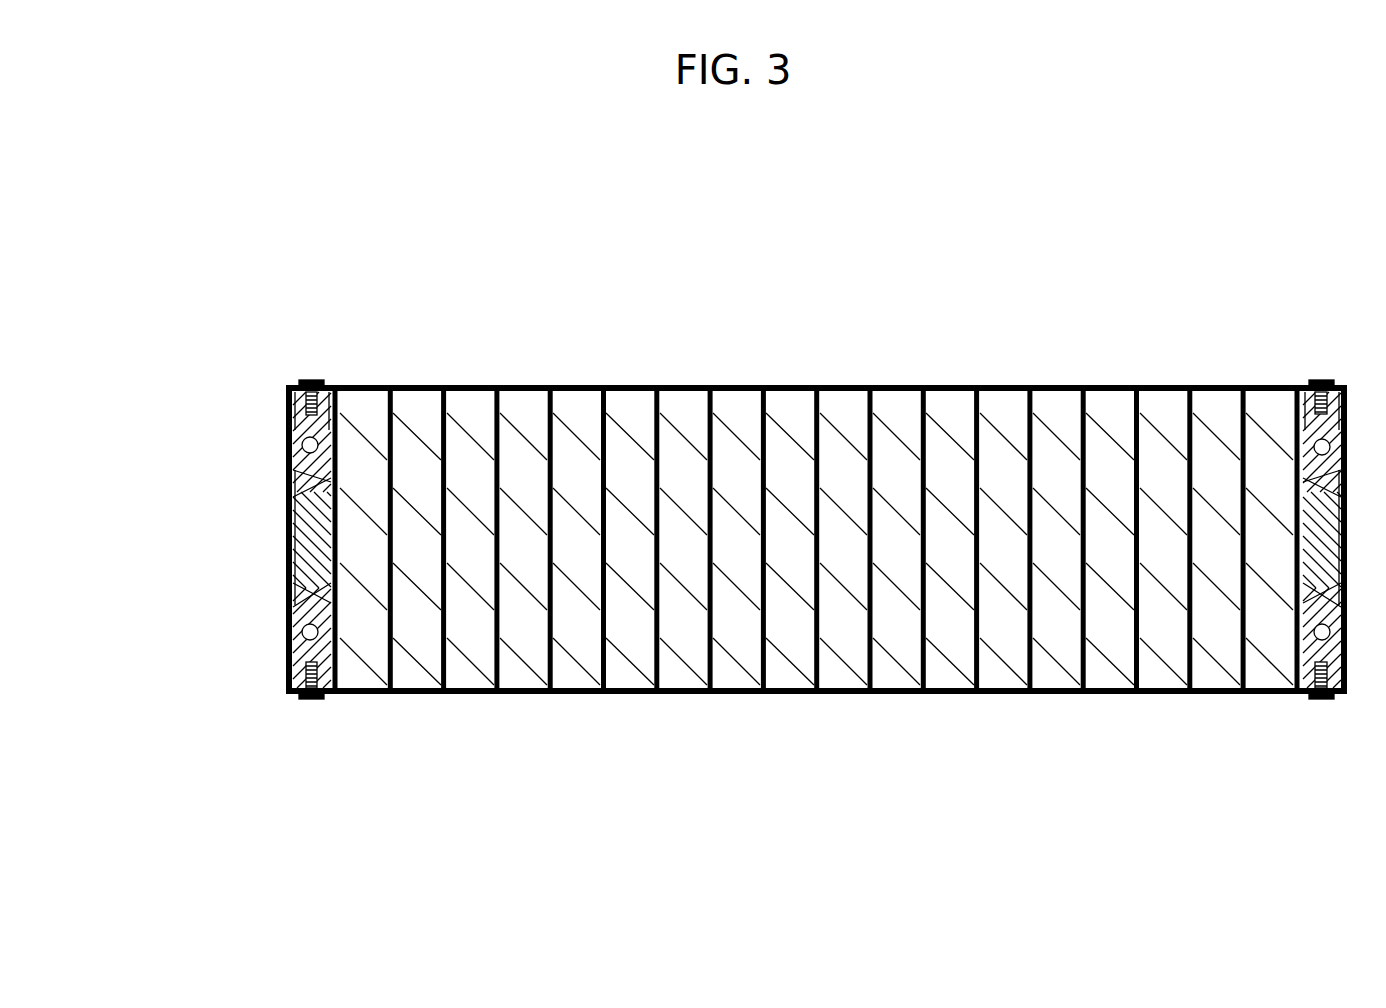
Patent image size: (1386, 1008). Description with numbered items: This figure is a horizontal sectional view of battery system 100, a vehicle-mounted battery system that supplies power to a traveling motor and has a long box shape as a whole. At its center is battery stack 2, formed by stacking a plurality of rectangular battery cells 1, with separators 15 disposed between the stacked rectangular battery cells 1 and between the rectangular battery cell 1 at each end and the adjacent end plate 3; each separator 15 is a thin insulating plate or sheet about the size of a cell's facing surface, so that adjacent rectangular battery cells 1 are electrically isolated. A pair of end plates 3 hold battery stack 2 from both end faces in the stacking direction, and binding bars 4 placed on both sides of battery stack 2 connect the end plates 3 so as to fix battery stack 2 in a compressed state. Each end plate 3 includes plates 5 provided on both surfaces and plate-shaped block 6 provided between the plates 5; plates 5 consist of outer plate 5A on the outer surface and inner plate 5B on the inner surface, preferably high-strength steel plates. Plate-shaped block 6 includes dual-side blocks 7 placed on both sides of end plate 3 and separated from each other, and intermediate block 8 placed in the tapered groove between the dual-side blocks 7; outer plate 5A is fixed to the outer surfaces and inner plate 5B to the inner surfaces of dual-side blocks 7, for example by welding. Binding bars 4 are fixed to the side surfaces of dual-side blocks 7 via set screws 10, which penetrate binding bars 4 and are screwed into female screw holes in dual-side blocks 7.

The battery system 100 is at (314, 224).
The rectangular battery cell 1 is at (368, 655).
The battery stack 2 is at (362, 817).
The end plate 3 is at (164, 412).
The binding bar 4 is at (790, 385).
The plate 5 is at (211, 385).
The outer plate 5A is at (287, 458).
The inner plate 5B is at (287, 413).
The plate-shaped block 6 is at (206, 495).
The dual-side block 7 is at (293, 472).
The intermediate block 8 is at (293, 562).
The set screw 10 is at (313, 382).
The separator 15 is at (394, 452).